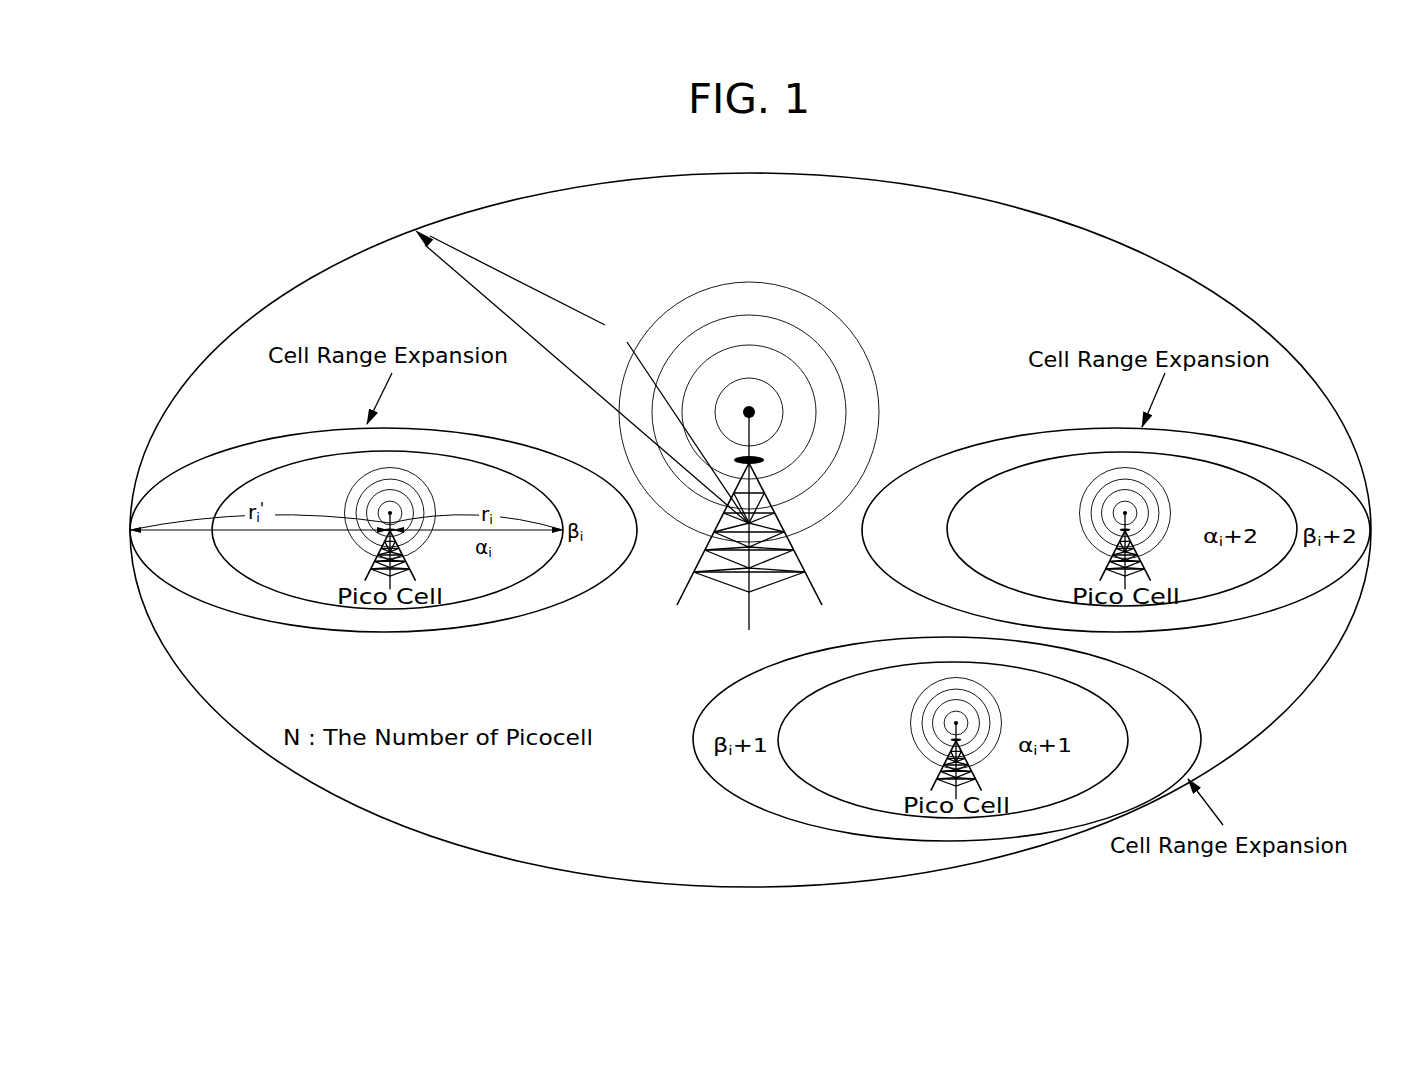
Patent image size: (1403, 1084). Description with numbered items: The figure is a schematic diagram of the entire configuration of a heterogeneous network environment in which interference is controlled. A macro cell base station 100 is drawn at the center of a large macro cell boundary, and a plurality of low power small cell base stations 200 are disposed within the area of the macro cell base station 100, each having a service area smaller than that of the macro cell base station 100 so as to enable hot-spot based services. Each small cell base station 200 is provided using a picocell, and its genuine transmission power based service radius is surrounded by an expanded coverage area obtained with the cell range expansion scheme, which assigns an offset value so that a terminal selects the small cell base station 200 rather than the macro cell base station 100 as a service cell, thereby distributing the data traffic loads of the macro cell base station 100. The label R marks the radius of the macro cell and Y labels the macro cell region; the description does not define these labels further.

The macro cell base station 100 is at (703, 547).
The small cell base station 200 is at (1113, 550).
The macro cell radius R is at (581, 376).
The macro cell Y is at (750, 530).